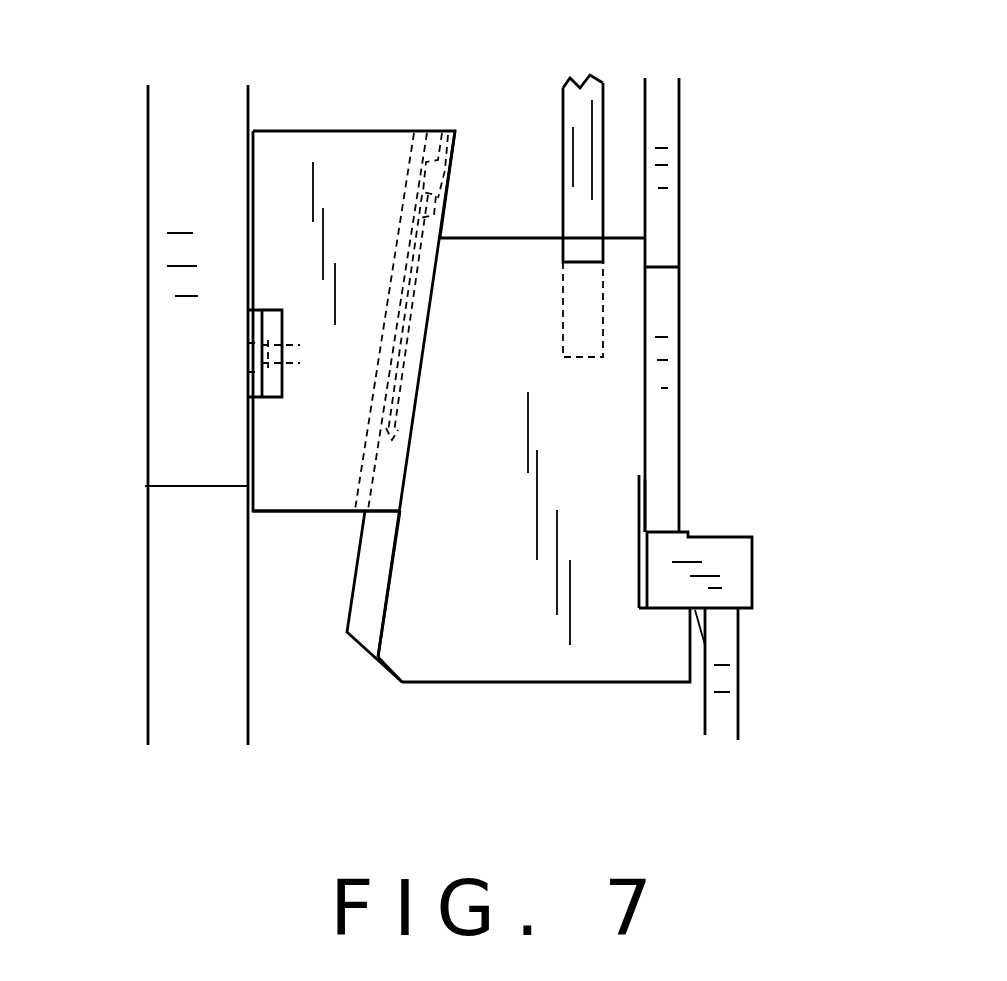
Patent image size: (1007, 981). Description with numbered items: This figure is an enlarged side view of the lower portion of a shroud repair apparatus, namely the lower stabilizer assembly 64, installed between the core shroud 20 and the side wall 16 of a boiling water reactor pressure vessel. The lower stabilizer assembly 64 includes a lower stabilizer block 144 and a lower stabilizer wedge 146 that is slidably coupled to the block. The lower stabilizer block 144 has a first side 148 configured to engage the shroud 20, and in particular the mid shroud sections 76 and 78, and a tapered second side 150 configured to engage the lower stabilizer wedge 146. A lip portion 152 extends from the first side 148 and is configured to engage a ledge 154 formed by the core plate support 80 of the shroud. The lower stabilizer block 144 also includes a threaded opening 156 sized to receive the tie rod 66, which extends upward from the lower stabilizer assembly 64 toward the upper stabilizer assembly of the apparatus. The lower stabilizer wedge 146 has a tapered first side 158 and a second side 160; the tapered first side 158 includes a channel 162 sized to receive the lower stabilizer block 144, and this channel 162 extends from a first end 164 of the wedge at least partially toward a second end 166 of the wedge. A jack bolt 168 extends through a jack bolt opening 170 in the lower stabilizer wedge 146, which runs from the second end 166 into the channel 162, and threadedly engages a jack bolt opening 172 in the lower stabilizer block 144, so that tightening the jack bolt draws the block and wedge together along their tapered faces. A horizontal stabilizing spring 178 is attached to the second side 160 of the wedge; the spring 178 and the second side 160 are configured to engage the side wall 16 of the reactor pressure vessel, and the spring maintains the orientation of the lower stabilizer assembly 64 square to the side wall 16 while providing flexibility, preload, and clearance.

The side wall 16 is at (177, 170).
The core shroud 20 is at (690, 168).
The lower stabilizer assembly 64 is at (572, 696).
The tie rod 66 is at (588, 105).
The mid shroud section 76 is at (663, 245).
The mid shroud section 78 is at (660, 482).
The core plate support 80 is at (752, 570).
The lower stabilizer block 144 is at (475, 647).
The lower stabilizer wedge 146 is at (312, 130).
The first side 148 is at (648, 430).
The tapered second side 150 is at (372, 625).
The lip portion 152 is at (653, 645).
The ledge 154 is at (740, 650).
The threaded opening 156 is at (580, 312).
The tapered first side 158 is at (407, 485).
The second side 160 is at (145, 486).
The channel 162 is at (390, 460).
The first end 164 is at (303, 512).
The second end 166 is at (392, 130).
The jack bolt 168 is at (440, 133).
The jack bolt opening 170 is at (432, 182).
The jack bolt opening 172 is at (417, 281).
The horizontal stabilizing spring 178 is at (251, 398).